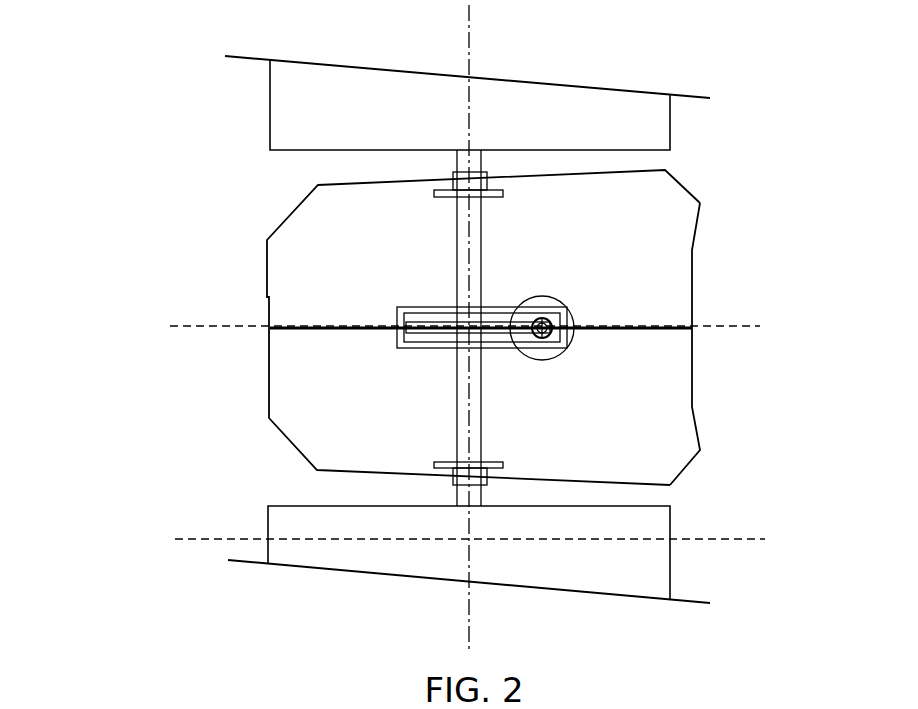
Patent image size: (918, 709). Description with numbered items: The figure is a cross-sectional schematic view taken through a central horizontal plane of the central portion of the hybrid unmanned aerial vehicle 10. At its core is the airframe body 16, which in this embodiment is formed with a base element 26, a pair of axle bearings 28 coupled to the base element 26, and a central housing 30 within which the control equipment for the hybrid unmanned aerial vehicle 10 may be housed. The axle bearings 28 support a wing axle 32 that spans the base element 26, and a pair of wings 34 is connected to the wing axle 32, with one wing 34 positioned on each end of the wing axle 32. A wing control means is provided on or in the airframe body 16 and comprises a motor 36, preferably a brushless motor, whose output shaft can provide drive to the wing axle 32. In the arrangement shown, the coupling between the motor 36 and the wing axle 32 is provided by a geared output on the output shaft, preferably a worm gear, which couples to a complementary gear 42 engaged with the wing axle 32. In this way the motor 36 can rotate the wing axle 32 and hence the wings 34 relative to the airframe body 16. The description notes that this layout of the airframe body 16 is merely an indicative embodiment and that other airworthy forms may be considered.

The hybrid unmanned aerial vehicle 10 is at (183, 104).
The airframe body 16 is at (699, 241).
The base element 26 is at (640, 430).
The axle bearings 28 is at (505, 192).
The central housing 30 is at (390, 308).
The wing axle 32 is at (450, 407).
The wings 34 is at (295, 96).
The motor 36 is at (578, 318).
The complementary gear 42 is at (432, 341).